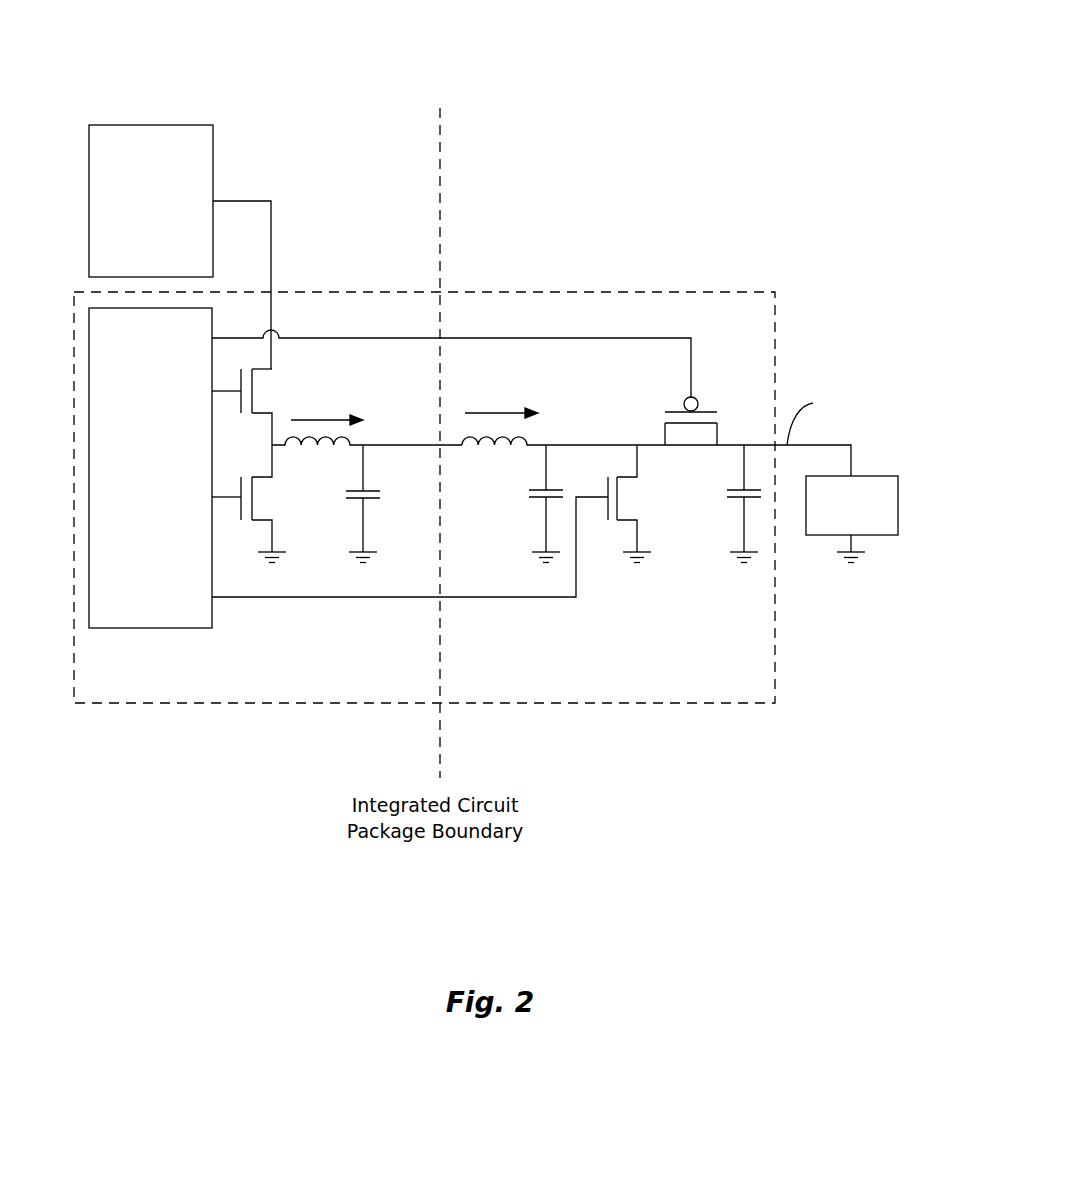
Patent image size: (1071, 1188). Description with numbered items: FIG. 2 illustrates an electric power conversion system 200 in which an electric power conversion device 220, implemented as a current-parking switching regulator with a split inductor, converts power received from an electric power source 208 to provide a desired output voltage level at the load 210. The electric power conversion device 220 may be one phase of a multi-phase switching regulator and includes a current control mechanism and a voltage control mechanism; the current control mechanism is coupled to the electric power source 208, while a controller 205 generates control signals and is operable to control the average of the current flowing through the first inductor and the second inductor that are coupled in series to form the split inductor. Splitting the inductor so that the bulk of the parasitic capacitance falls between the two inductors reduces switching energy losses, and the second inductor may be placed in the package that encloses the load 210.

The electric power conversion system 200 is at (486, 363).
The controller 205 is at (150, 468).
The electric power source 208 is at (151, 201).
The load 210 is at (852, 519).
The electric power conversion device 220 is at (462, 452).